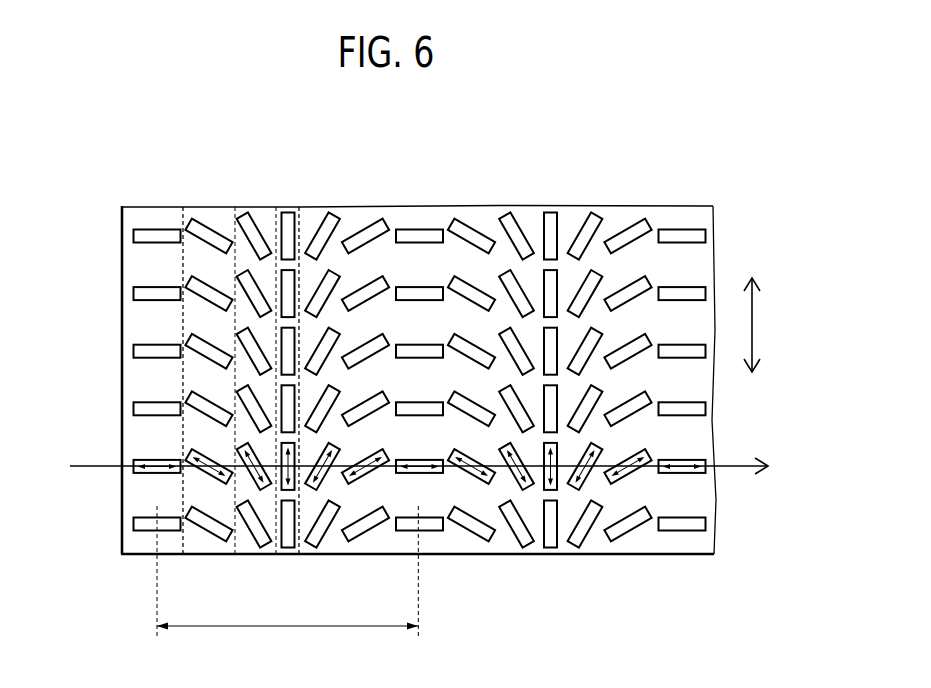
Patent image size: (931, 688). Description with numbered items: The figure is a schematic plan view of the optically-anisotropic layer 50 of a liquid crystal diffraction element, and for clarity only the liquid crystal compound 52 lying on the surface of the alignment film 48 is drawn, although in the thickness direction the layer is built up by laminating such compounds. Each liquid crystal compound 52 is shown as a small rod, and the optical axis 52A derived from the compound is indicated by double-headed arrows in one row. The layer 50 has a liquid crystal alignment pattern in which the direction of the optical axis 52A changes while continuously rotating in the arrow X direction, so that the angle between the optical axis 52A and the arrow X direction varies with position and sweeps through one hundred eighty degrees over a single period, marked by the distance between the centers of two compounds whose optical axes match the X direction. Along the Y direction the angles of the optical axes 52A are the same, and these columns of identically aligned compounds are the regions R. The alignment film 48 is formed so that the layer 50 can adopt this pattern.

The optically-anisotropic layer 50 is at (581, 177).
The alignment film 48 is at (140, 376).
The liquid crystal compound 52 is at (155, 234).
The optical axis 52A is at (632, 458).
The region R is at (287, 207).
The arrow X direction X is at (728, 468).
The Y direction Y is at (752, 325).